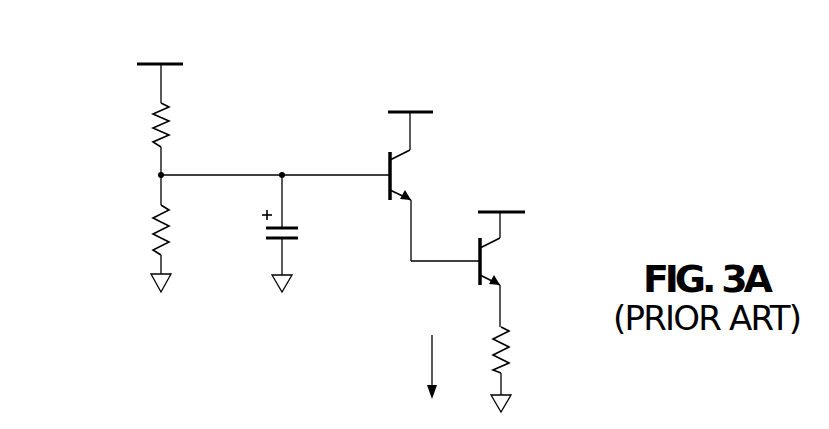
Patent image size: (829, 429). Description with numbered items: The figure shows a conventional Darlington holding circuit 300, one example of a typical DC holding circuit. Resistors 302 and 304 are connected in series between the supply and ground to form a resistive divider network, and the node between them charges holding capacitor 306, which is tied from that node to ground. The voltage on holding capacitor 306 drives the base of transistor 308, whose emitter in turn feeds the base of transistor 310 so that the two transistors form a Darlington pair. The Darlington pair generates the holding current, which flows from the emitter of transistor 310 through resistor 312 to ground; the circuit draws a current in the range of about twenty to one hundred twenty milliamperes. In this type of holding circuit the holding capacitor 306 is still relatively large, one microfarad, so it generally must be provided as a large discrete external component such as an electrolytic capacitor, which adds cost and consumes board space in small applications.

The Darlington holding circuit 300 is at (75, 124).
The resistor 302 is at (166, 104).
The resistor 304 is at (166, 214).
The holding capacitor 306 is at (306, 232).
The transistor 308 is at (388, 156).
The transistor 310 is at (496, 244).
The resistor 312 is at (507, 362).